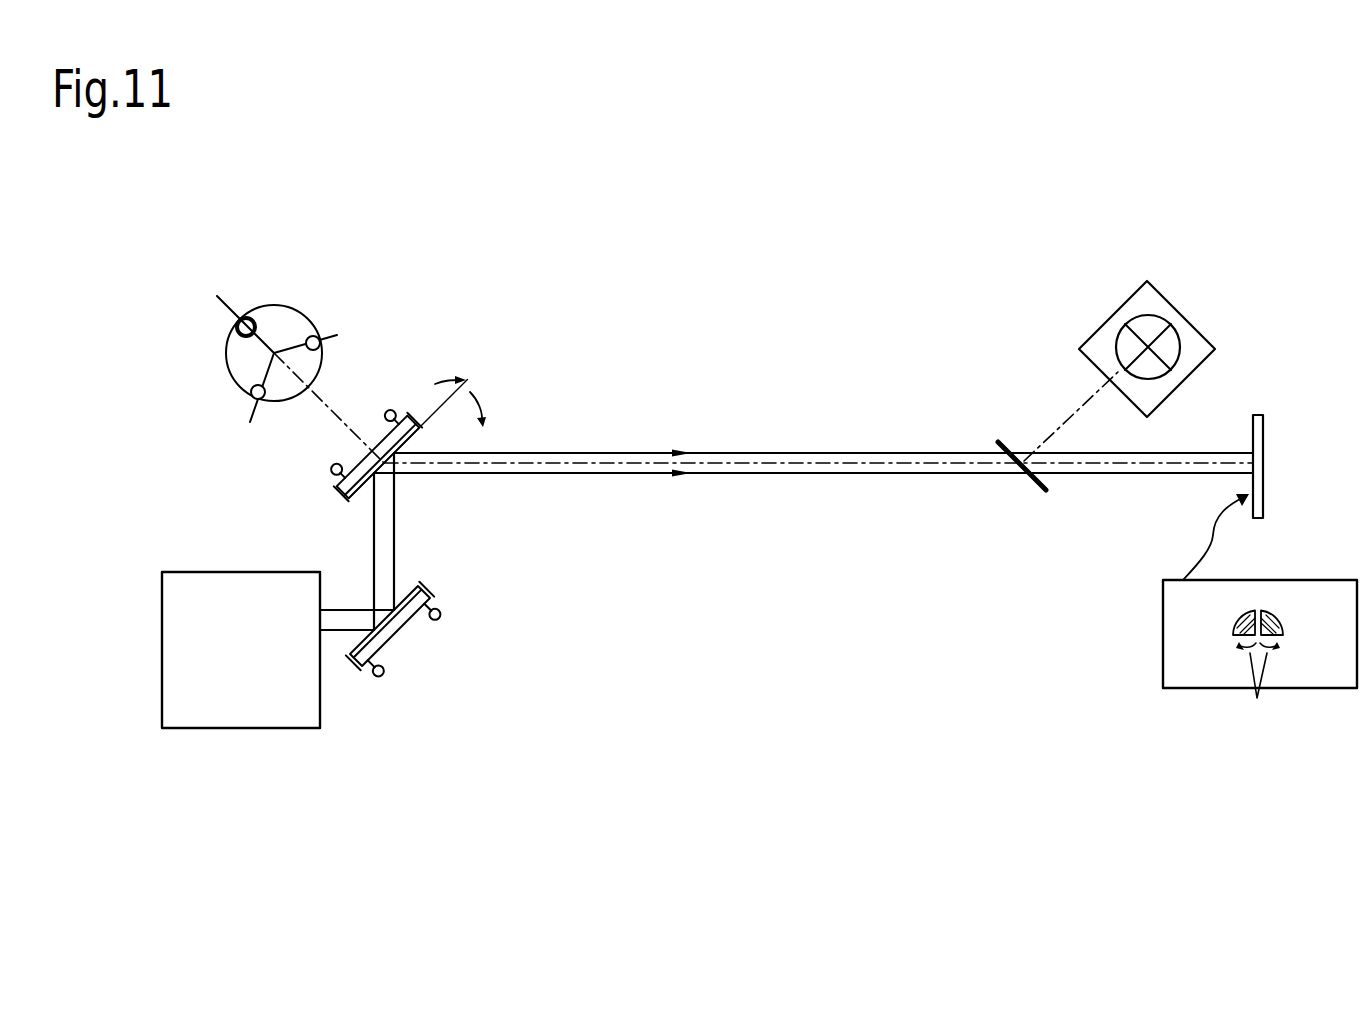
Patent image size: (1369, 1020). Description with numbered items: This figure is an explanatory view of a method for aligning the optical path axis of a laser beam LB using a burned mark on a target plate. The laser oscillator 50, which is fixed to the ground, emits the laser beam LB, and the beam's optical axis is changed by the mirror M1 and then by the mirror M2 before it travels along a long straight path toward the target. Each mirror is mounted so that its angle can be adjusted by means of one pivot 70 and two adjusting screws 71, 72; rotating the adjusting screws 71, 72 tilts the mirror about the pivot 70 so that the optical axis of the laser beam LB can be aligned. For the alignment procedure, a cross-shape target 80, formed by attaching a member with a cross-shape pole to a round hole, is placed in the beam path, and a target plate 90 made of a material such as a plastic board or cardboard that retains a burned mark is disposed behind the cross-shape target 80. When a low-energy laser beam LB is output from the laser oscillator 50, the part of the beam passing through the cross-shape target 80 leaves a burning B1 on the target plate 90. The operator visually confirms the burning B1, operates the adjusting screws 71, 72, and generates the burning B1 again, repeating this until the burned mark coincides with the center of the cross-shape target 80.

The laser oscillator 50 is at (237, 722).
The pivot 70 is at (247, 318).
The adjusting screw 71 is at (252, 396).
The adjusting screw 72 is at (316, 337).
The cross-shape target 80 is at (1007, 442).
The target plate 90 is at (1265, 432).
The mirror M1 is at (397, 637).
The mirror M2 is at (407, 417).
The laser beam LB is at (747, 475).
The burning B1 is at (1260, 678).